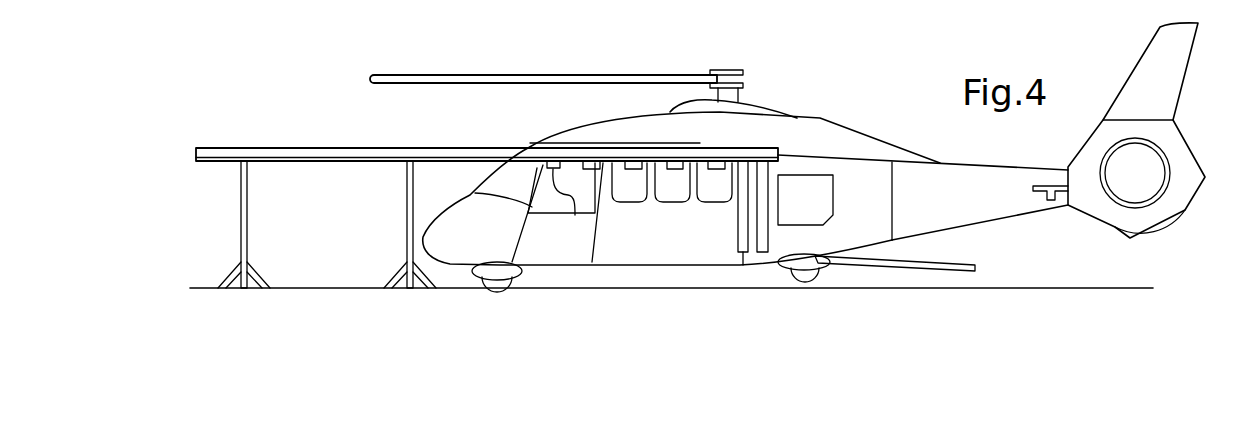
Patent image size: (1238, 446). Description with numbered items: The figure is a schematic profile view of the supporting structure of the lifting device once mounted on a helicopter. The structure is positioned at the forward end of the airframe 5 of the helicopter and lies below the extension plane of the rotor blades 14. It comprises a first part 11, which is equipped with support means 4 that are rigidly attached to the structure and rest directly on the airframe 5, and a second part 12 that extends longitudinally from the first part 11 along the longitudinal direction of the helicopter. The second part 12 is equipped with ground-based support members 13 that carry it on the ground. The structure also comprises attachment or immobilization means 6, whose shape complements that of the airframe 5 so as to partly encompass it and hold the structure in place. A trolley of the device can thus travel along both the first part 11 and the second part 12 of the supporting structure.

The support means 4 is at (634, 160).
The airframe 5 is at (641, 235).
The attachment or immobilization means 6 is at (768, 185).
The first part 11 is at (746, 148).
The second part 12 is at (279, 148).
The ground-based support members 13 is at (409, 233).
The rotor blades 14 is at (421, 75).